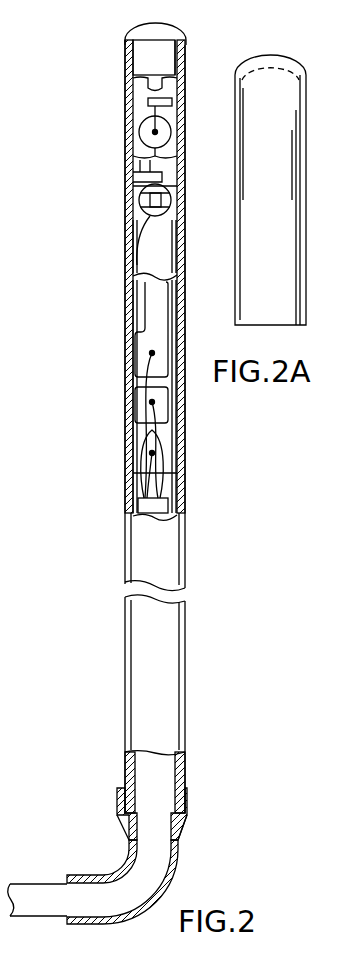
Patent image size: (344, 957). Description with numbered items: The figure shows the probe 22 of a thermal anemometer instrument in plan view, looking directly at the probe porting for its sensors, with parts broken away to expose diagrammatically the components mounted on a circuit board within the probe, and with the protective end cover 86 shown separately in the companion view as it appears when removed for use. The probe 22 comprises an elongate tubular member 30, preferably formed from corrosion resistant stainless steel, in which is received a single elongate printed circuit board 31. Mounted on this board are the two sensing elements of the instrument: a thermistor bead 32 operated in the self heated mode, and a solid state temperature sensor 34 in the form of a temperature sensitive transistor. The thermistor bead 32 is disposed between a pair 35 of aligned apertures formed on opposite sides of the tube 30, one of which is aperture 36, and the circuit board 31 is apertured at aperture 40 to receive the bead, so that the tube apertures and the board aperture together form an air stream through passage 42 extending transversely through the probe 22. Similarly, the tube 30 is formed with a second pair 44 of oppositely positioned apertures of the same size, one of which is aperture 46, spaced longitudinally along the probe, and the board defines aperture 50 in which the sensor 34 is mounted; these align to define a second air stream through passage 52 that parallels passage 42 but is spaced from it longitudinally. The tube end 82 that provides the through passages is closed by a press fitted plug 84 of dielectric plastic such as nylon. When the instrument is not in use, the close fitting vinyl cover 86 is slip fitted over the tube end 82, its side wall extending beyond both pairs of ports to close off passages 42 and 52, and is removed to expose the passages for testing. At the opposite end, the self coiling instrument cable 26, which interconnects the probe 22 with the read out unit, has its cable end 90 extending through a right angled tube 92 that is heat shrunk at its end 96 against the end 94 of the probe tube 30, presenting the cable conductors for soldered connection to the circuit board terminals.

In FIG. 2, the probe 22 is at (90, 630).
In FIG. 2, the self coiling instrument cable 26 is at (40, 920).
In FIG. 2, the elongate tubular member 30 is at (172, 645).
In FIG. 2, the printed circuit board 31 is at (158, 321).
In FIG. 2, the thermistor bead 32 is at (134, 139).
In FIG. 2, the solid state temperature sensor 34 is at (138, 216).
In FIG. 2, the pair of aligned apertures 35 is at (112, 132).
In FIG. 2, the aperture 36 is at (140, 126).
In FIG. 2, the circuit board aperture 40 is at (168, 138).
In FIG. 2, the air stream through passage 42 is at (178, 118).
In FIG. 2, the pair of oppositely positioned apertures 44 is at (110, 193).
In FIG. 2, the aperture 46 is at (153, 220).
In FIG. 2, the circuit board aperture 50 is at (158, 210).
In FIG. 2, the second air stream through passage 52 is at (184, 199).
In FIG. 2, the tube end 82 is at (148, 57).
In FIG. 2, the plug 84 is at (171, 18).
In FIG. 2A, the cover 86 is at (271, 54).
In FIG. 2, the cable end 90 is at (148, 872).
In FIG. 2, the tube 92 is at (100, 875).
In FIG. 2, the probe tube end 94 is at (182, 773).
In FIG. 2, the tube end 96 is at (187, 810).